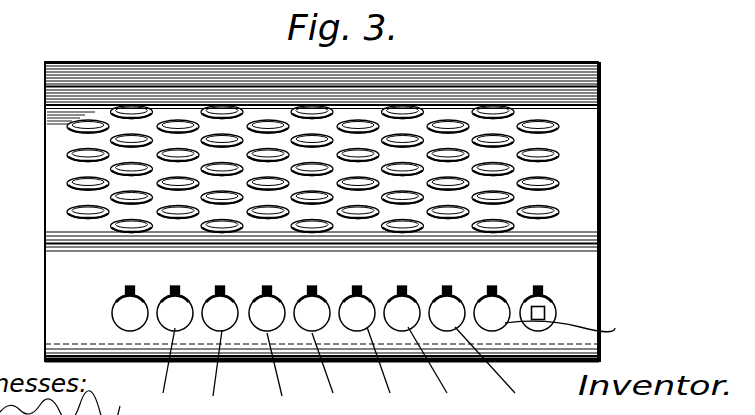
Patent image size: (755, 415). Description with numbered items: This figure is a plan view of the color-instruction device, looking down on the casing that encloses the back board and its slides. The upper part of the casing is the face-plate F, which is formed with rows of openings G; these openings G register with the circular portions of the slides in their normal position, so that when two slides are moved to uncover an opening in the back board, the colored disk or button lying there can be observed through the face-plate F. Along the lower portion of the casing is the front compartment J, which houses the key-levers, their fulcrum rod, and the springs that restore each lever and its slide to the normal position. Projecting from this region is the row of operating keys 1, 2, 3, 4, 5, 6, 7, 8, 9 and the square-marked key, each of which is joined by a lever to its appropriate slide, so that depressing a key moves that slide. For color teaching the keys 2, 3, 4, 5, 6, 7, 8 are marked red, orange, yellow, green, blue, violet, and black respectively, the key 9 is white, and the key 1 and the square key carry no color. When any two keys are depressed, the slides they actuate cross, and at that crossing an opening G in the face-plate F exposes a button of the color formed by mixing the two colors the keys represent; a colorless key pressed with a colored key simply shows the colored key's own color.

The face-plate F is at (46, 142).
The openings G is at (68, 184).
The front compartment J is at (334, 347).
The key 1 is at (130, 308).
The key 2 is at (170, 347).
The key 3 is at (221, 347).
The key 4 is at (276, 347).
The key 5 is at (333, 347).
The key 6 is at (377, 347).
The key 7 is at (430, 347).
The key 8 is at (486, 347).
The key 9 is at (564, 311).